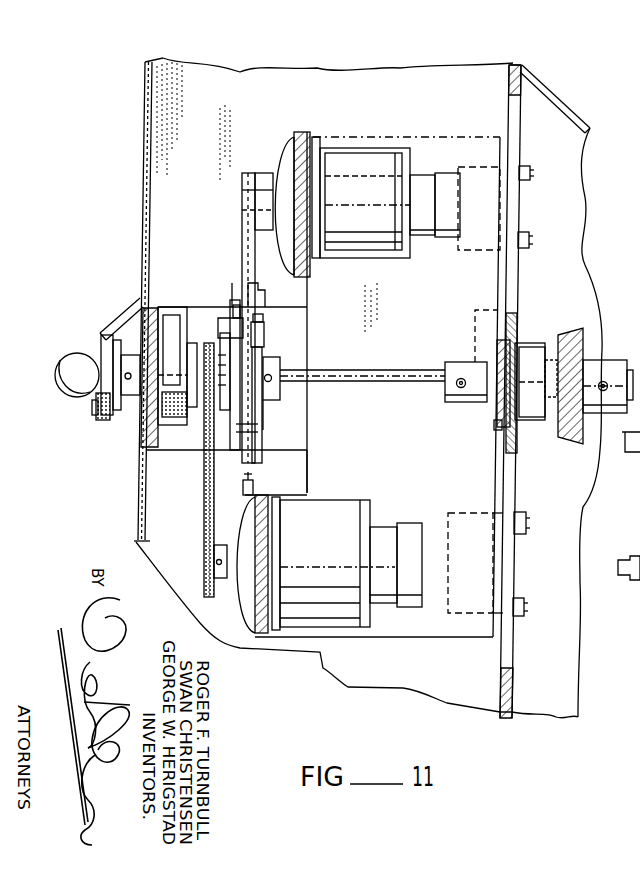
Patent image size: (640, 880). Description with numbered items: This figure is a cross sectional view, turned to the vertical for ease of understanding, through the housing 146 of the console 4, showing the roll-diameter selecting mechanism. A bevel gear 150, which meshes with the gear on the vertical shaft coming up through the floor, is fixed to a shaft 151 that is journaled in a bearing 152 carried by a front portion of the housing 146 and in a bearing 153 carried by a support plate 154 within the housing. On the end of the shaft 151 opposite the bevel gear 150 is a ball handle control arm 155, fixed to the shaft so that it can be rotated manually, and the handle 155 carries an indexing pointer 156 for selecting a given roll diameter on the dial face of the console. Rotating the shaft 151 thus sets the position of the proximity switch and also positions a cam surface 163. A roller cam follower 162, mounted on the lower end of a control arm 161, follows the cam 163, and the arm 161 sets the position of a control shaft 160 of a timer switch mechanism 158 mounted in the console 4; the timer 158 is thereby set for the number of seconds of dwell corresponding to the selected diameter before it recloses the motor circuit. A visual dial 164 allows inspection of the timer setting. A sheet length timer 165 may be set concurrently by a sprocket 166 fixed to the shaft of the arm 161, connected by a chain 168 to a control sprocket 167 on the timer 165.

The console 4 is at (122, 168).
The housing 146 is at (575, 113).
The bevel gear 150 is at (578, 322).
The shaft 151 is at (393, 383).
The bearing 152 is at (174, 360).
The bearing 153 is at (531, 357).
The support plate 154 is at (515, 443).
The ball handle control arm 155 is at (75, 365).
The indexing pointer 156 is at (130, 300).
The timer switch mechanism 158 is at (376, 208).
The control shaft 160 is at (243, 205).
The control arm 161 is at (255, 275).
The roller cam follower 162 is at (258, 335).
The cam surface 163 is at (260, 440).
The visual dial 164 is at (277, 150).
The sheet length timer 165 is at (343, 512).
The sprocket 166 is at (222, 360).
The control sprocket 167 is at (222, 582).
The chain 168 is at (203, 482).